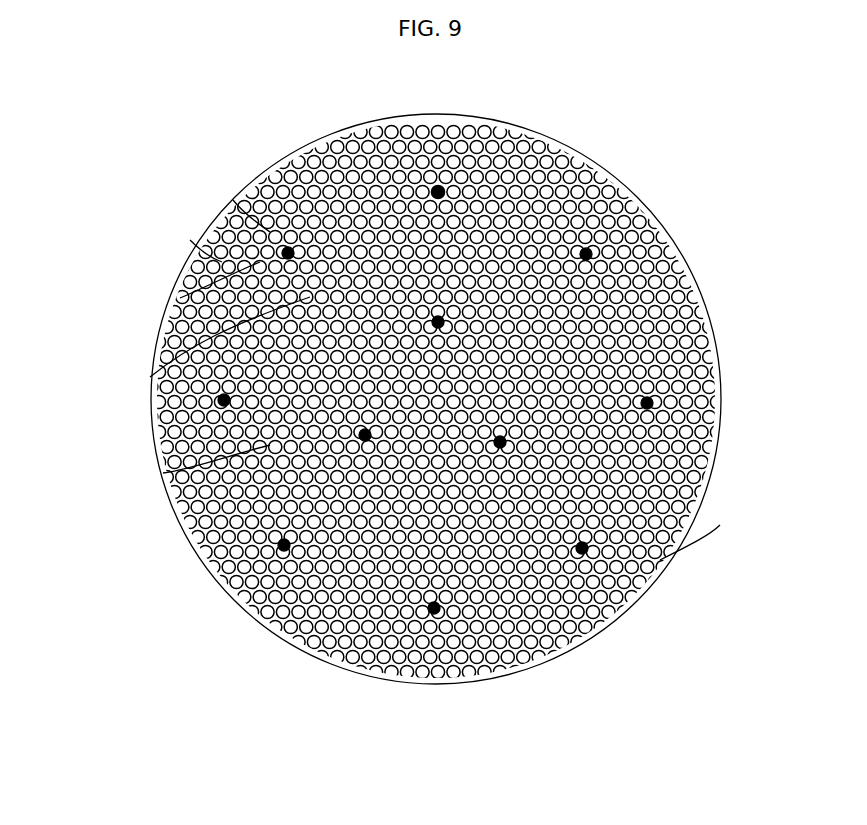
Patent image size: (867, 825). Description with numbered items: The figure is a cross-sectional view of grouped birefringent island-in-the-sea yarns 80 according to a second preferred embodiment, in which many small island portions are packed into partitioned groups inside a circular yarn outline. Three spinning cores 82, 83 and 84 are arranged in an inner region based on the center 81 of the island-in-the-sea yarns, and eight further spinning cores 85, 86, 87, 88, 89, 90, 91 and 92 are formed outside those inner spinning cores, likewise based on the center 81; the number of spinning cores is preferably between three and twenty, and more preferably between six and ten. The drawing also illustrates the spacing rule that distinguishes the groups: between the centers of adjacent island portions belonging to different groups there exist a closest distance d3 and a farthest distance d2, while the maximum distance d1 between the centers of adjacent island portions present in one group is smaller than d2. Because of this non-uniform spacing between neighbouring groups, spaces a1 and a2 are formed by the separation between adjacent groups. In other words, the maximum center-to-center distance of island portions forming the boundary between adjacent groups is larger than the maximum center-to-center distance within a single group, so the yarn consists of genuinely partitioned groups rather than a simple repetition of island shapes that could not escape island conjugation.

The island-in-the-sea yarns 80 is at (570, 148).
The center of island-in-the-sea yarns 81 is at (506, 443).
The spinning core 82 is at (445, 321).
The spinning core 83 is at (360, 436).
The spinning core 84 is at (588, 548).
The spinning core 85 is at (652, 401).
The spinning core 86 is at (657, 221).
The spinning core 87 is at (438, 186).
The spinning core 88 is at (293, 300).
The spinning core 89 is at (220, 404).
The spinning core 90 is at (278, 546).
The spinning core 91 is at (434, 614).
The spinning core 92 is at (660, 560).
The space a1 is at (233, 200).
The space a2 is at (190, 240).
The maximum distance between centers of adjacent island portions in one group d1 is at (163, 473).
The farthest distance between centers of adjacent island portions in different group d2 is at (180, 298).
The closest distance between centers of adjacent island portions in different groups d3 is at (153, 380).